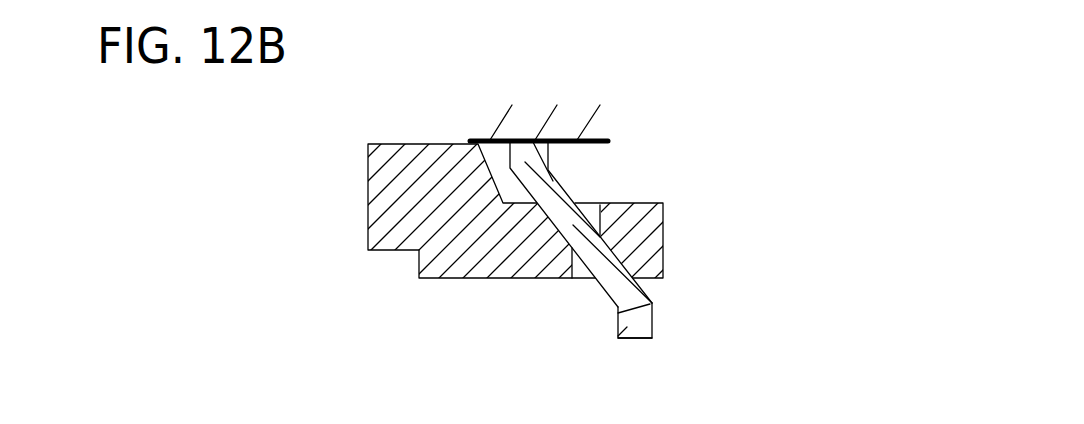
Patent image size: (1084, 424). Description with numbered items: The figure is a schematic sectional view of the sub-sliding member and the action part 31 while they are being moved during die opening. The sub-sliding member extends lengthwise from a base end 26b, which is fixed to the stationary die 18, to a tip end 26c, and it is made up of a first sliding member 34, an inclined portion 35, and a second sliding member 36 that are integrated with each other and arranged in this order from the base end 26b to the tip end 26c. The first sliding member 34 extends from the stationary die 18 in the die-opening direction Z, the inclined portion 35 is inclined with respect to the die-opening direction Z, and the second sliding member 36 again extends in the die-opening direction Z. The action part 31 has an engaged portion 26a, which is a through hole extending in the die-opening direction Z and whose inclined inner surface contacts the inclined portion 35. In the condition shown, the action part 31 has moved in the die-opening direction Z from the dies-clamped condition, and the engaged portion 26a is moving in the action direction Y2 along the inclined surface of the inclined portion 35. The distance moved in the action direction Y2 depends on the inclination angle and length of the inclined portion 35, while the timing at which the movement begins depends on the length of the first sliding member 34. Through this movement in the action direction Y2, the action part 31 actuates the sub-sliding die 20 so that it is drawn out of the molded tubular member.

The stationary die 18 is at (503, 110).
The sub-sliding die 20 is at (664, 213).
The engaged portion 26a is at (572, 267).
The base end 26b is at (552, 160).
The tip end 26c is at (640, 340).
The action part 31 is at (411, 277).
The first sliding member 34 is at (563, 184).
The inclined portion 35 is at (584, 278).
The second sliding member 36 is at (633, 322).
The action direction Y2 is at (345, 213).
The die-opening direction Z is at (700, 218).